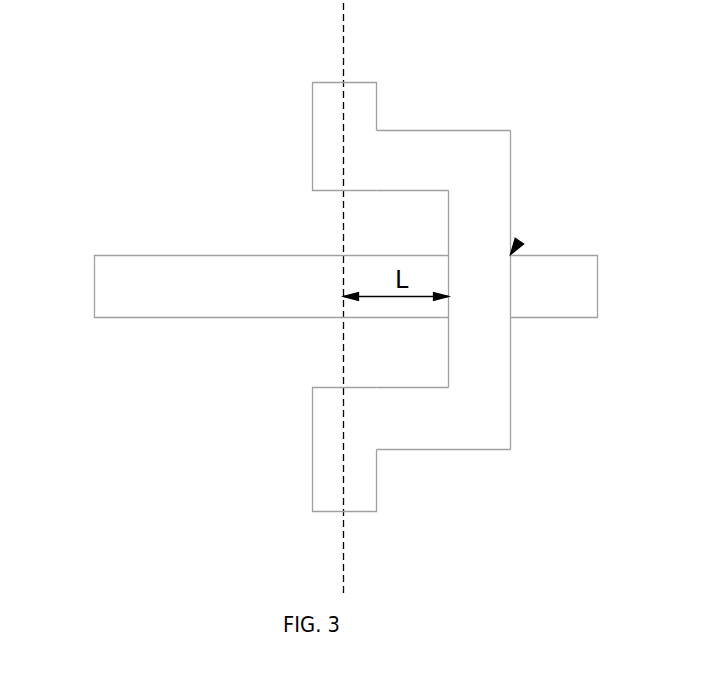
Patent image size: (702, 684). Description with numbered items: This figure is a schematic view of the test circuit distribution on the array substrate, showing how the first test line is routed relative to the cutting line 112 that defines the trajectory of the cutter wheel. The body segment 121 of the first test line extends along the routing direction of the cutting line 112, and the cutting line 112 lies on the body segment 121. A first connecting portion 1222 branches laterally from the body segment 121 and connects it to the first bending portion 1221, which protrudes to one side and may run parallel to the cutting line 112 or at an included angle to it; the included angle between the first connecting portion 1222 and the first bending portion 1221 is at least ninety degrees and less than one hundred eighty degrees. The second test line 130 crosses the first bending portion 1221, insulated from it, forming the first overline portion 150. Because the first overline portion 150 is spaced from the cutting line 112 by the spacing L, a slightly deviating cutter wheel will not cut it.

The cutting line 112 is at (343, 21).
The body segment 121 is at (318, 141).
The first bending portion 1221 is at (489, 363).
The first connecting portion 1222 is at (422, 150).
The second test line 130 is at (119, 293).
The first overline portion 150 is at (519, 241).